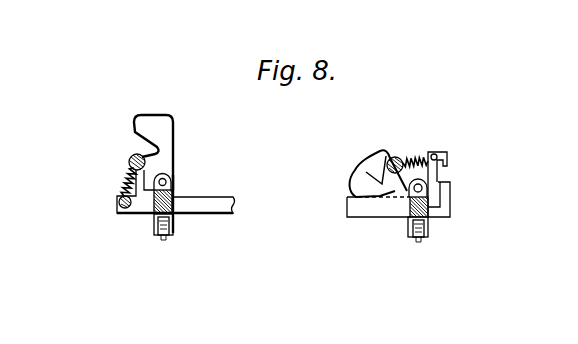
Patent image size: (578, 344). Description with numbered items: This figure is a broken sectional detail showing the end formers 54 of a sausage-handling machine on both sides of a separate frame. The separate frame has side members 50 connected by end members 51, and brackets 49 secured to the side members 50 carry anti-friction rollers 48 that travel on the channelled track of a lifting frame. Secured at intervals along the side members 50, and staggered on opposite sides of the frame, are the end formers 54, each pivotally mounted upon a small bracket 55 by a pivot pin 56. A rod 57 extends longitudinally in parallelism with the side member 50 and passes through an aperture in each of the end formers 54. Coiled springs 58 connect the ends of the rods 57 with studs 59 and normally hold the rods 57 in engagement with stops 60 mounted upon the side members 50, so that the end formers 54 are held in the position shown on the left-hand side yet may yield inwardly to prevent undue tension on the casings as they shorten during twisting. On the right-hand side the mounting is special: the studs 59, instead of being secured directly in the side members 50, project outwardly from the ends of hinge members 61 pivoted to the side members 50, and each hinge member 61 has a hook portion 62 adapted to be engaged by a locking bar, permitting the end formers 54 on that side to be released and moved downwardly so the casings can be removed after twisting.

The anti-friction rollers 48 is at (163, 242).
The brackets 49 is at (173, 224).
The side members 50 is at (160, 205).
The end members 51 is at (220, 205).
The end formers 54 is at (173, 140).
The small brackets 55 is at (168, 182).
The pivot pins 56 is at (174, 179).
The rod 57 is at (131, 155).
The coiled springs 58 is at (133, 178).
The studs 59 is at (118, 207).
The stops 60 is at (140, 210).
The hinge members 61 is at (437, 178).
The hook portion 62 is at (447, 160).